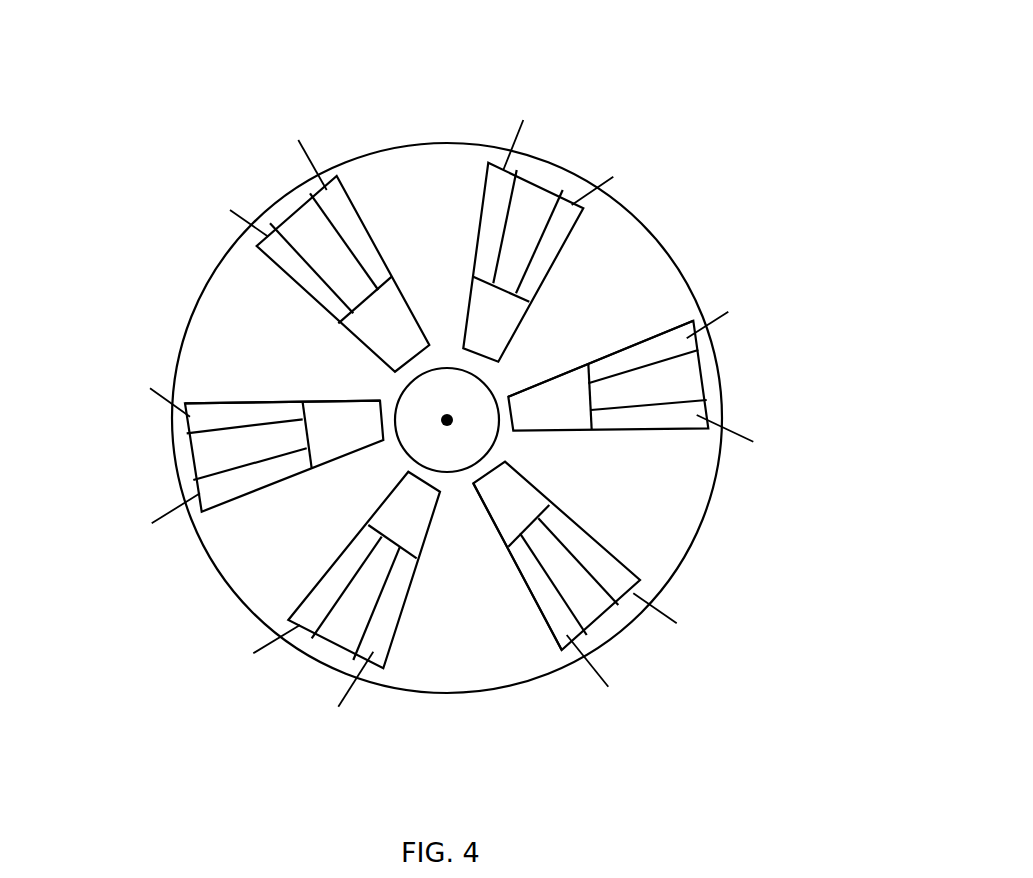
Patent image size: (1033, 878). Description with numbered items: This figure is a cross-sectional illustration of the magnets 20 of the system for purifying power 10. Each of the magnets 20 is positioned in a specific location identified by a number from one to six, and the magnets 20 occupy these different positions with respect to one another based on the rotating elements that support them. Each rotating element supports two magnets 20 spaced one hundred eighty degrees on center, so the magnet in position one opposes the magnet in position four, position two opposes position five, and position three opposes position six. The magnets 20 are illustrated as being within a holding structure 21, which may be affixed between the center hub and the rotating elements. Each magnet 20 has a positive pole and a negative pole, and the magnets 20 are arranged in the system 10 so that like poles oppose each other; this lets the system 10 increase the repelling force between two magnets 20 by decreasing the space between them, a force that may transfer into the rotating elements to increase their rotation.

The system for purifying power 10 is at (675, 35).
The magnets 20 is at (385, 238).
The holding structure 21 is at (632, 343).